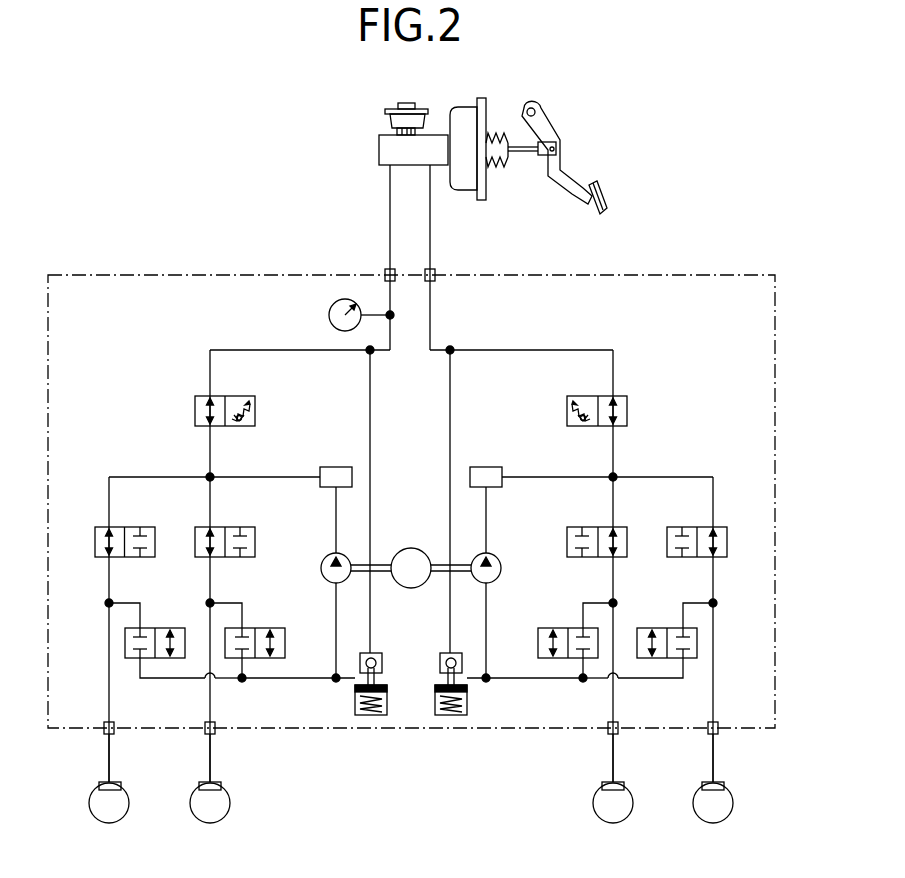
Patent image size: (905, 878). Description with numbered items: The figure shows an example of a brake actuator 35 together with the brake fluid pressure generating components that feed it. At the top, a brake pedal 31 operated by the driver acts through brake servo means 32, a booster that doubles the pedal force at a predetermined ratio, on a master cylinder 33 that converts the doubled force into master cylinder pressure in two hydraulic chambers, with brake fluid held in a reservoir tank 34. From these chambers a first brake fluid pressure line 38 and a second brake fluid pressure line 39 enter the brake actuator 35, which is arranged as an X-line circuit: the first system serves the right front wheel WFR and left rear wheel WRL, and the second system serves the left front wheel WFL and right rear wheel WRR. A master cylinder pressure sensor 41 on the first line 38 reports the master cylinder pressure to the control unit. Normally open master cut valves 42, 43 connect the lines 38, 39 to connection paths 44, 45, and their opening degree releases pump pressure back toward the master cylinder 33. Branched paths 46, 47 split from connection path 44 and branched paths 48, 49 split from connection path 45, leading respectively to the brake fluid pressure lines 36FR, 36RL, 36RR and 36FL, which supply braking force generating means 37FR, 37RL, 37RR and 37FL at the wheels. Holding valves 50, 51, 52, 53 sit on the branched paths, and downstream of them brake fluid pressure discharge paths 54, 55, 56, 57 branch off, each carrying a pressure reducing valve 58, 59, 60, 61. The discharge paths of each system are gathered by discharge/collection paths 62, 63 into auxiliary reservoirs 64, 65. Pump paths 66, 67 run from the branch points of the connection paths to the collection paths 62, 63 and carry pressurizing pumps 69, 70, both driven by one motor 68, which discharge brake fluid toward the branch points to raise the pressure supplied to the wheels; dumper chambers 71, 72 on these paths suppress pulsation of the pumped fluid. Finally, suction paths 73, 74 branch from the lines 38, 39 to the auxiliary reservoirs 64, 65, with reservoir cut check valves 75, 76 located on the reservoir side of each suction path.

The brake pedal 31 is at (572, 175).
The brake servo means 32 is at (452, 112).
The master cylinder 33 is at (380, 152).
The reservoir tank 34 is at (386, 118).
The brake actuator 35 is at (636, 275).
The brake fluid pressure line of the right front wheel 36FR is at (109, 752).
The brake fluid pressure line of the left rear wheel 36RL is at (210, 752).
The brake fluid pressure line of the right rear wheel 36RR is at (613, 752).
The brake fluid pressure line of the left front wheel 36FL is at (713, 752).
The braking force generating means of the right front wheel 37FR is at (100, 784).
The braking force generating means of the left rear wheel 37RL is at (201, 784).
The braking force generating means of the right rear wheel 37RR is at (622, 784).
The braking force generating means of the left front wheel 37FL is at (722, 784).
The first brake fluid pressure line 38 is at (390, 243).
The second brake fluid pressure line 39 is at (430, 243).
The master cylinder pressure sensor 41 is at (328, 315).
The master cut valve 42 is at (230, 395).
The master cut valve 43 is at (592, 395).
The connection path 44 is at (210, 450).
The connection path 45 is at (613, 450).
The branched path 46 is at (109, 505).
The branched path 47 is at (210, 505).
The branched path 48 is at (613, 506).
The branched path 49 is at (713, 506).
The holding valve 50 is at (130, 527).
The holding valve 51 is at (232, 527).
The holding valve 52 is at (592, 527).
The holding valve 53 is at (693, 527).
The brake fluid pressure discharge path 54 is at (125, 600).
The brake fluid pressure discharge path 55 is at (225, 600).
The brake fluid pressure discharge path 56 is at (595, 600).
The brake fluid pressure discharge path 57 is at (697, 600).
The pressure reducing valve 58 is at (160, 628).
The pressure reducing valve 59 is at (260, 628).
The pressure reducing valve 60 is at (562, 628).
The pressure reducing valve 61 is at (662, 628).
The brake fluid pressure discharge/collection path 62 is at (303, 678).
The brake fluid pressure discharge/collection path 63 is at (523, 678).
The auxiliary reservoir 64 is at (355, 700).
The auxiliary reservoir 65 is at (467, 700).
The pump path 66 is at (255, 477).
The pump path 67 is at (565, 477).
The motor 68 is at (413, 547).
The pressurizing pump 69 is at (320, 568).
The pressurizing pump 70 is at (502, 568).
The dumper chamber 71 is at (336, 467).
The dumper chamber 72 is at (486, 467).
The suction path 73 is at (370, 380).
The suction path 74 is at (450, 380).
The reservoir cut check valve 75 is at (378, 653).
The reservoir cut check valve 76 is at (445, 653).
The right front wheel WFR is at (126, 808).
The left rear wheel WRL is at (227, 808).
The right rear wheel WRR is at (588, 808).
The left front wheel WFL is at (690, 808).